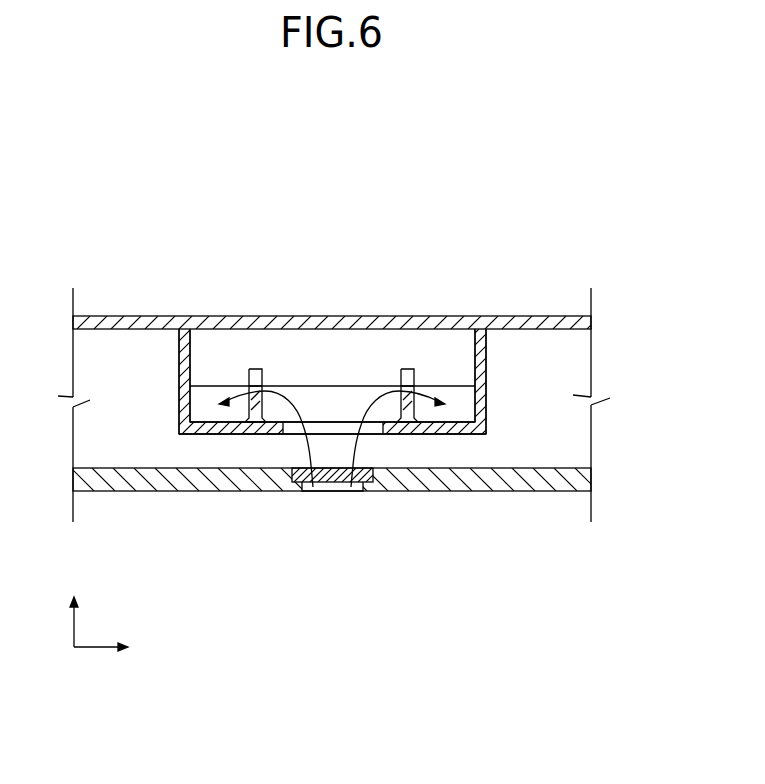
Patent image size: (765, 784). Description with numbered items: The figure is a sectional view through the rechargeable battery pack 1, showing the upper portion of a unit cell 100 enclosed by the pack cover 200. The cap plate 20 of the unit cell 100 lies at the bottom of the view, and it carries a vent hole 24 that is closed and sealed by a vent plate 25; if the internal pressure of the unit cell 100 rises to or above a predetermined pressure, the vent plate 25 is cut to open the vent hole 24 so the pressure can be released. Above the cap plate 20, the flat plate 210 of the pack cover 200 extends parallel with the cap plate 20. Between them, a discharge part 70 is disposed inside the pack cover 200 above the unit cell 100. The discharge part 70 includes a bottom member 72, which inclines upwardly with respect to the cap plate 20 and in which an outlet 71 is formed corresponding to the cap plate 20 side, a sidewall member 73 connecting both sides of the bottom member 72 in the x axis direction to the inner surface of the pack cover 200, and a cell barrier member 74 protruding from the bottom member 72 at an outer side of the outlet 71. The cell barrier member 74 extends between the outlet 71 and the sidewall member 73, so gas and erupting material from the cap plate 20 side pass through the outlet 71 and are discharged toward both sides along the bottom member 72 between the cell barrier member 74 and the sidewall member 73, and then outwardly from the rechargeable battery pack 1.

The rechargeable battery pack 1 is at (390, 250).
The unit cell 100 is at (404, 600).
The pack cover 200 is at (170, 316).
The flat plate 210 is at (510, 320).
The discharge part 70 is at (491, 412).
The outlet 71 is at (327, 425).
The bottom member 72 is at (204, 428).
The sidewall member 73 is at (185, 380).
The cell barrier member 74 is at (255, 414).
The cap plate 20 is at (513, 480).
The vent hole 24 is at (344, 488).
The vent plate 25 is at (318, 488).